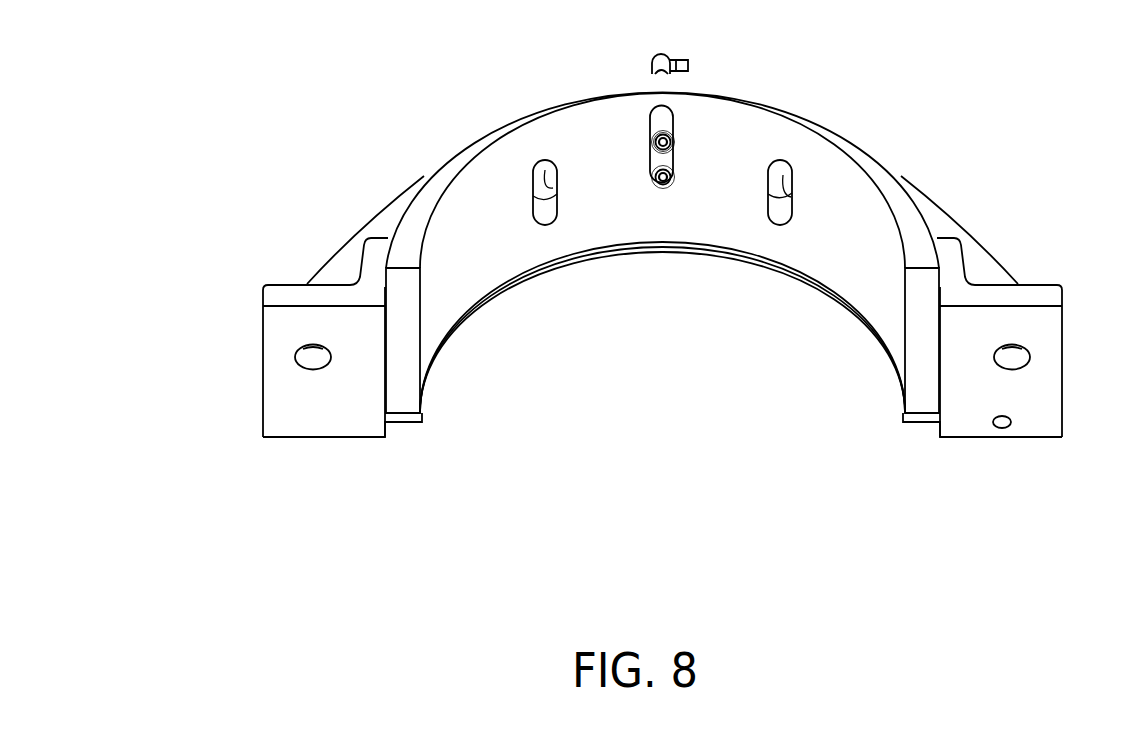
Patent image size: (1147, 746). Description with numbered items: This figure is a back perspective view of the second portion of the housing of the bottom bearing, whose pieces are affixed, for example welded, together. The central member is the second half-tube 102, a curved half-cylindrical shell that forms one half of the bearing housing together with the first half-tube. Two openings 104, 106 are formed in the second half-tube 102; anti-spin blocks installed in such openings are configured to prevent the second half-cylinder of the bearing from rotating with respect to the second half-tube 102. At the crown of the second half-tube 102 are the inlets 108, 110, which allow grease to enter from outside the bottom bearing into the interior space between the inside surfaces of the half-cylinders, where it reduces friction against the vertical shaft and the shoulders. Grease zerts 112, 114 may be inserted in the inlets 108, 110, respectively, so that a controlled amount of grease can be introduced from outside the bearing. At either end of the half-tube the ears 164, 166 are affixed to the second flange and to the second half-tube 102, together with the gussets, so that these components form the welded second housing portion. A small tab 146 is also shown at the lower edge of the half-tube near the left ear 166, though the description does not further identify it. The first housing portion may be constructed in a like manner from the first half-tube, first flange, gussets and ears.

The second half-tube 102 is at (462, 278).
The opening 104 is at (553, 175).
The opening 106 is at (792, 197).
The inlet 108 is at (673, 140).
The inlet 110 is at (675, 145).
The grease zert 112 is at (662, 122).
The grease zert 114 is at (652, 165).
The tab 146 is at (403, 421).
The ear 164 is at (1038, 385).
The ear 166 is at (280, 396).